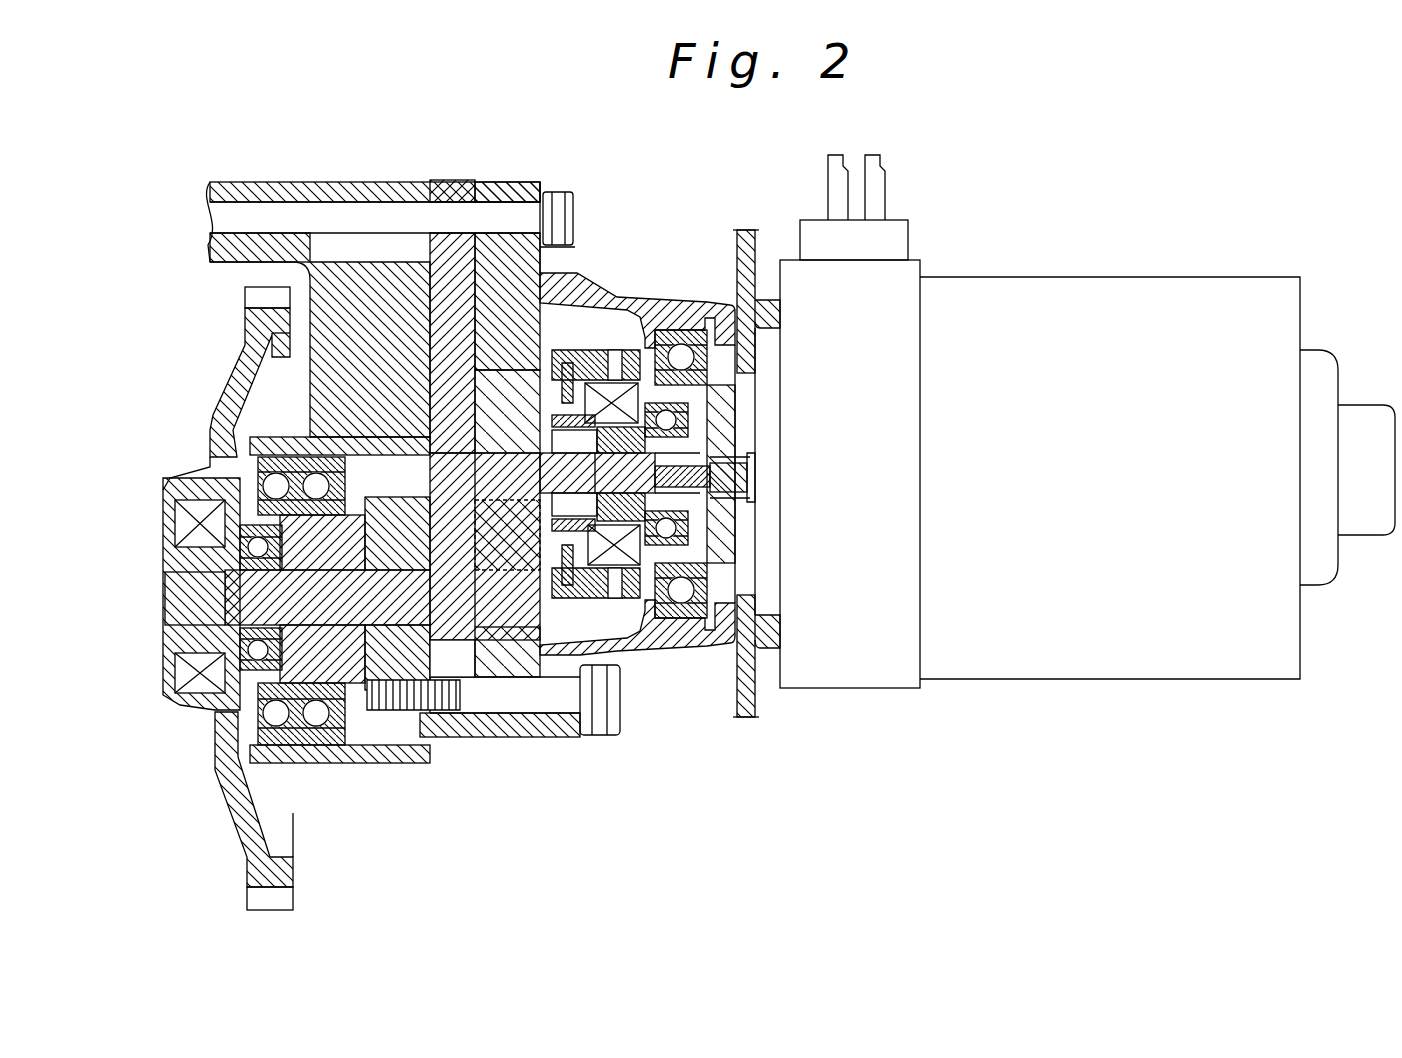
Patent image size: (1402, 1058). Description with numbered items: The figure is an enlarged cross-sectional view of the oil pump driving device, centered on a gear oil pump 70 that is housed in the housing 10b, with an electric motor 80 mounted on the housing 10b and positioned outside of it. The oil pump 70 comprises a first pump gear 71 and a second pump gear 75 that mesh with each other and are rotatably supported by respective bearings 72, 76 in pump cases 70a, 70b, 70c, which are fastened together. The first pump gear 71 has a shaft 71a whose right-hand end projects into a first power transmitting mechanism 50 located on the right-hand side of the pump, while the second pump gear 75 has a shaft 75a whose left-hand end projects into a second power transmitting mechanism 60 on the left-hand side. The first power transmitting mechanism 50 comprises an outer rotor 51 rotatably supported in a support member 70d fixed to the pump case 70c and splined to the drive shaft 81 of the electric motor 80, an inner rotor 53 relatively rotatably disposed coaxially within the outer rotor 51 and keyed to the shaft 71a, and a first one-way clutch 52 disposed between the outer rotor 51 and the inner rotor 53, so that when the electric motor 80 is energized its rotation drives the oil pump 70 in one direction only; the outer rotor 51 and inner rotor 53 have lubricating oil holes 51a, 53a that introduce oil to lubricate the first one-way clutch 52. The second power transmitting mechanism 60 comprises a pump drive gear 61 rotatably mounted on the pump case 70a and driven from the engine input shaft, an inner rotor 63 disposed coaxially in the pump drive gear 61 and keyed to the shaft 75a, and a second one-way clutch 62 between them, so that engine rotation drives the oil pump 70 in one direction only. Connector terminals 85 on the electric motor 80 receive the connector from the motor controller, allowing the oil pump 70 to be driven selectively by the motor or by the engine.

The housing 10b is at (760, 697).
The first power transmitting mechanism 50 is at (637, 472).
The outer rotor 51 is at (605, 360).
The lubricating oil hole 51a is at (620, 640).
The first one-way clutch 52 is at (645, 335).
The inner rotor 53 is at (722, 458).
The lubricating oil hole 53a is at (560, 537).
The second power transmitting mechanism 60 is at (206, 590).
The pump drive gear 61 is at (262, 872).
The second one-way clutch 62 is at (197, 690).
The inner rotor 63 is at (176, 597).
The gear oil pump 70 is at (433, 478).
The pump case 70a is at (332, 183).
The pump case 70b is at (455, 192).
The pump case 70c is at (522, 183).
The support member 70d is at (574, 740).
The first pump gear 71 is at (455, 398).
The shaft 71a is at (500, 442).
The bearing 72 is at (407, 440).
The second pump gear 75 is at (468, 735).
The shaft 75a is at (400, 632).
The bearing 76 is at (393, 572).
The electric motor 80 is at (1122, 489).
The drive shaft 81 is at (750, 480).
The connector terminals 85 is at (885, 197).